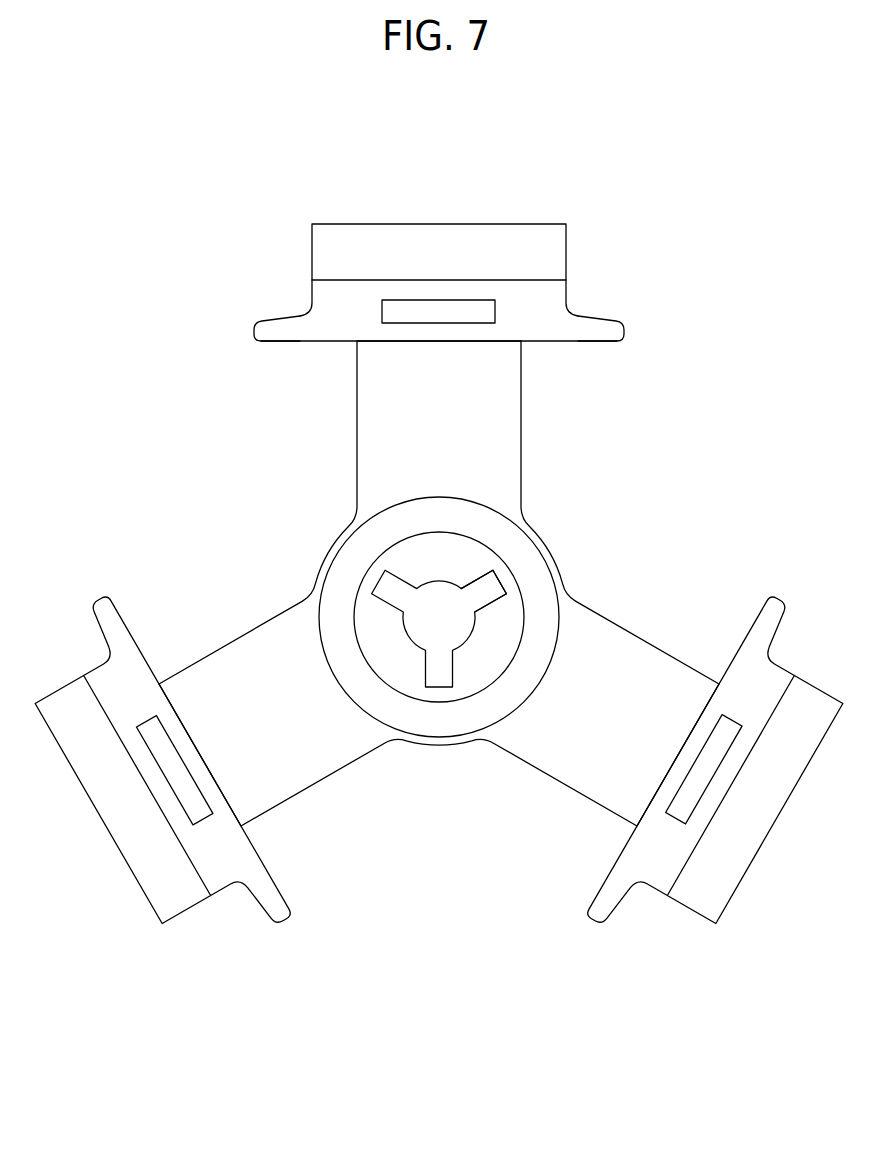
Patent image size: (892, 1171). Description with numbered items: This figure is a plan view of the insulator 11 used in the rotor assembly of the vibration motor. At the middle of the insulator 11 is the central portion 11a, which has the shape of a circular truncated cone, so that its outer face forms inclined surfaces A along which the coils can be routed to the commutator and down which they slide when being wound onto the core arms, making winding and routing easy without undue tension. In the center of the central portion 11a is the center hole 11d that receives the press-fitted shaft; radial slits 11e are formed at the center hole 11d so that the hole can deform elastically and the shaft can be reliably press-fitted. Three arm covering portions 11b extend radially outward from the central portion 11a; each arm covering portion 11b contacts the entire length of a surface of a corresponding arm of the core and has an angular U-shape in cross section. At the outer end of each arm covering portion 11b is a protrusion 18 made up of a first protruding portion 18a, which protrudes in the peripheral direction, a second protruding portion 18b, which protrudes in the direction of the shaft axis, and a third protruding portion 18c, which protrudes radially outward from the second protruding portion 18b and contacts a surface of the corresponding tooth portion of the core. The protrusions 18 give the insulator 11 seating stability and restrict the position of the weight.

The insulator 11 is at (401, 552).
The central portion 11a is at (502, 670).
The arm covering portion 11b is at (521, 434).
The center hole 11d is at (434, 596).
The radial slit 11e is at (492, 590).
The protrusion 18 is at (439, 569).
The first protruding portion 18a is at (275, 344).
The second protruding portion 18b is at (420, 345).
The third protruding portion 18c is at (438, 233).
The inclined surface A is at (543, 652).